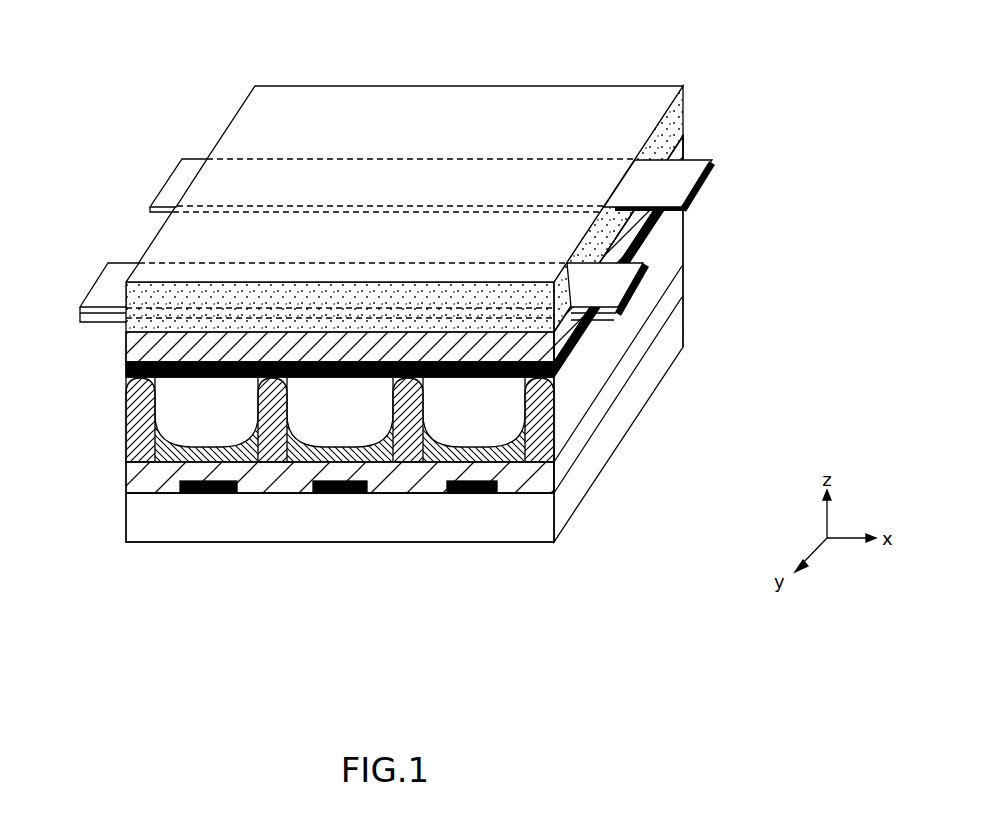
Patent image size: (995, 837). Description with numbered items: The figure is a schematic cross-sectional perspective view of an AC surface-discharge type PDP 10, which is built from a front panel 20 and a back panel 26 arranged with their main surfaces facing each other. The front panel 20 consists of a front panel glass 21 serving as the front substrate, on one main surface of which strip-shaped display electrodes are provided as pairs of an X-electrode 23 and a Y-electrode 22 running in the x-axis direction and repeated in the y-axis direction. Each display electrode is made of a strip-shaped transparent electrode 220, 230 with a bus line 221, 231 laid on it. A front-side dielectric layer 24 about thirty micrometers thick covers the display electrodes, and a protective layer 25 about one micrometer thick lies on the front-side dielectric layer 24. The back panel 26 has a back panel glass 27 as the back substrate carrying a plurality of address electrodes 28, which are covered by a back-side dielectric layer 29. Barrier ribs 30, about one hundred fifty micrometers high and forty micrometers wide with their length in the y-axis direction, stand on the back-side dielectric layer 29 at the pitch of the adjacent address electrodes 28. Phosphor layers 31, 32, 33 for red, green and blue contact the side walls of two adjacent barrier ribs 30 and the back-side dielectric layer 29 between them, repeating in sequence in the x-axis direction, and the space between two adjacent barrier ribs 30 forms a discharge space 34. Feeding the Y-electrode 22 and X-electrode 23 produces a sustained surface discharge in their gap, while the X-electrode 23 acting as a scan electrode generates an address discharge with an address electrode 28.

The PDP 10 is at (455, 68).
The front panel 20 is at (180, 124).
The front panel glass 21 is at (684, 100).
The Y-electrode 22 is at (437, 289).
The transparent electrode 220 is at (622, 273).
The bus line 221 is at (660, 307).
The X-electrode 23 is at (491, 179).
The transparent electrode 230 is at (714, 161).
The bus line 231 is at (710, 176).
The front-side dielectric layer 24 is at (125, 340).
The protective layer 25 is at (125, 368).
The back panel 26 is at (625, 500).
The back panel glass 27 is at (130, 513).
The address electrodes 28 is at (333, 552).
The back-side dielectric layer 29 is at (128, 470).
The barrier ribs 30 is at (369, 428).
The phosphor layer 31 is at (176, 474).
The phosphor layer 32 is at (400, 456).
The phosphor layer 33 is at (513, 449).
The discharge space 34 is at (225, 393).